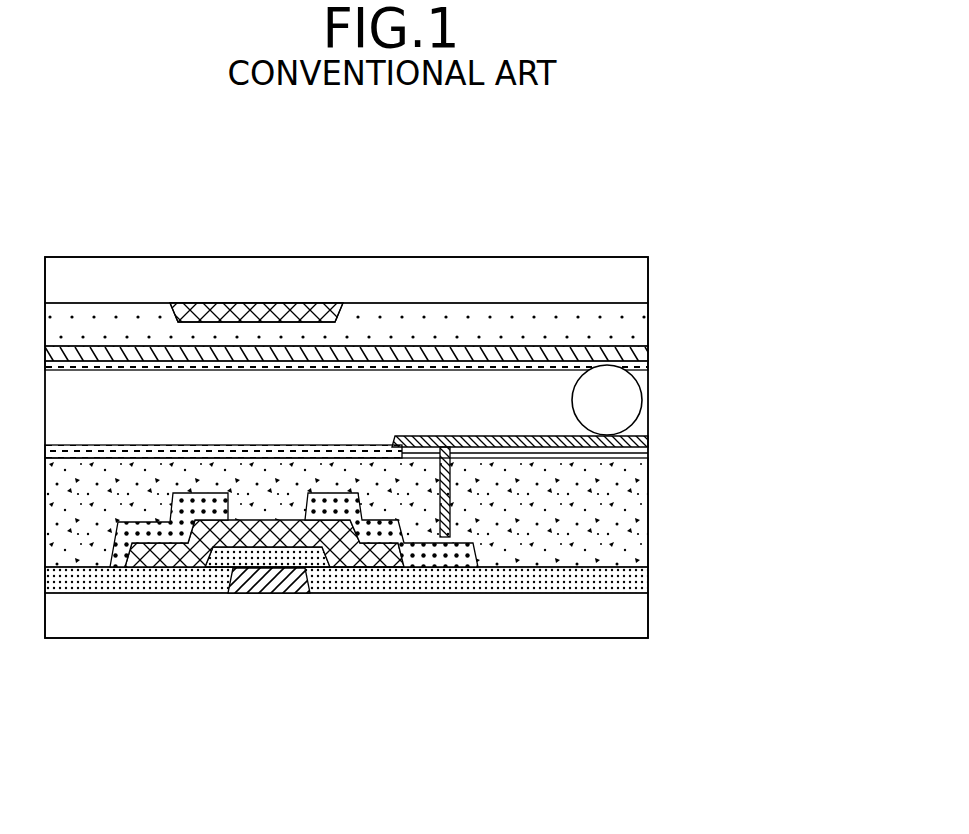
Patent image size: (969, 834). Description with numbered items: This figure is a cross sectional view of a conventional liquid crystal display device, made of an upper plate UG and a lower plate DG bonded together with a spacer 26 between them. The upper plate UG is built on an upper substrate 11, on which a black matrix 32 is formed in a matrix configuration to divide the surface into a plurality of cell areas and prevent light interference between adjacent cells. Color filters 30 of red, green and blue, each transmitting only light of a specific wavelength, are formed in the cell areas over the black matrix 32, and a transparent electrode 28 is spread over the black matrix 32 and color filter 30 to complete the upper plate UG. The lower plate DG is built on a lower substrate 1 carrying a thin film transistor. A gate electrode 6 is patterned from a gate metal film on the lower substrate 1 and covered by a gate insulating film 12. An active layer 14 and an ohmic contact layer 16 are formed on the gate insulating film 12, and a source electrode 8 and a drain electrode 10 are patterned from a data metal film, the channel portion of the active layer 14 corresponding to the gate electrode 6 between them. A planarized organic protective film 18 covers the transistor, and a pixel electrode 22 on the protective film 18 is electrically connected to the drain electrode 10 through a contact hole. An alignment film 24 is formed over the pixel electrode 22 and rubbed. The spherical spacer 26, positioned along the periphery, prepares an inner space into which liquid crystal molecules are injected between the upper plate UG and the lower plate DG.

The lower substrate 1 is at (633, 613).
The gate electrode 6 is at (265, 585).
The source electrode 8 is at (127, 590).
The drain electrode 10 is at (465, 565).
The upper substrate 11 is at (633, 276).
The gate insulating film 12 is at (635, 580).
The active layer 14 is at (195, 590).
The ohmic contact layer 16 is at (380, 565).
The protective film 18 is at (633, 516).
The pixel electrode 22 is at (645, 450).
The alignment film 24 is at (655, 440).
The spacer 26 is at (630, 395).
The transparent electrode 28 is at (650, 348).
The color filter 30 is at (633, 320).
The black matrix 32 is at (640, 362).
The upper plate UG is at (742, 297).
The lower plate DG is at (744, 571).